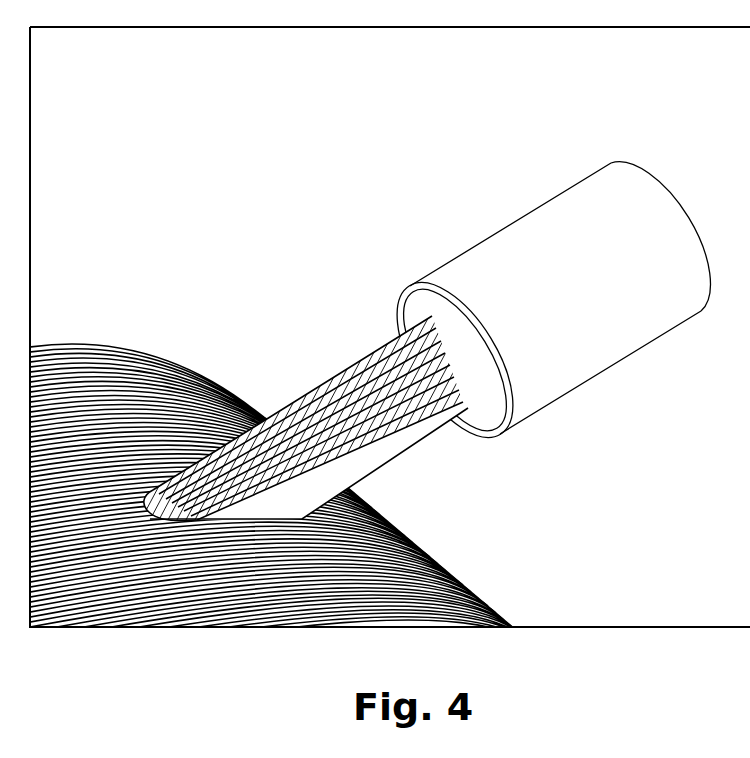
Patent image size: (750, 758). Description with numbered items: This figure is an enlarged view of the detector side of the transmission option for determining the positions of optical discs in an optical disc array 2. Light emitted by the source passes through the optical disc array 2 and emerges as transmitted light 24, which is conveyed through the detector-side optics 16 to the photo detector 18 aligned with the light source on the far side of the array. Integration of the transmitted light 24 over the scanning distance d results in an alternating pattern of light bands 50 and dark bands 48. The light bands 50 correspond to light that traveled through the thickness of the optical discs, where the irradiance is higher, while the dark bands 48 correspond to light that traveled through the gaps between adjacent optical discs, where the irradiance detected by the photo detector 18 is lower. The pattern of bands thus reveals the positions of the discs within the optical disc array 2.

The optical disc array 2 is at (96, 372).
The detector-side optics 16 is at (542, 272).
The photo detector 18 is at (596, 183).
The transmitted light 24 is at (381, 476).
The dark bands 48 is at (311, 372).
The light bands 50 is at (303, 425).
The scanning distance d is at (422, 428).